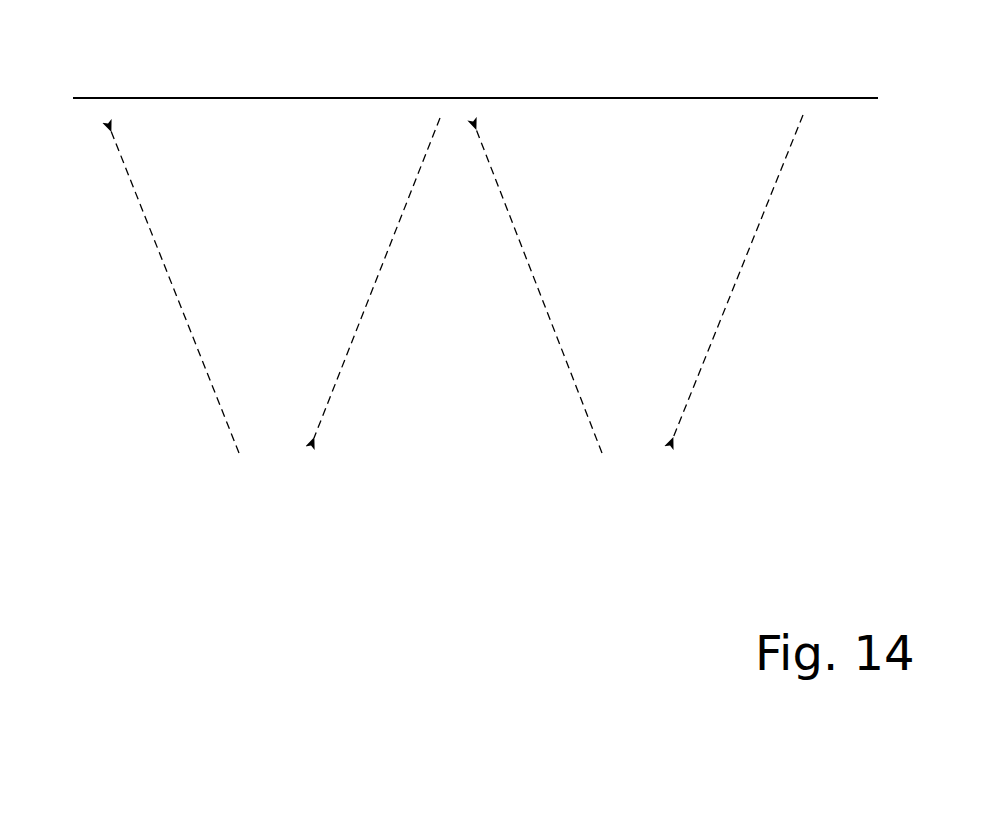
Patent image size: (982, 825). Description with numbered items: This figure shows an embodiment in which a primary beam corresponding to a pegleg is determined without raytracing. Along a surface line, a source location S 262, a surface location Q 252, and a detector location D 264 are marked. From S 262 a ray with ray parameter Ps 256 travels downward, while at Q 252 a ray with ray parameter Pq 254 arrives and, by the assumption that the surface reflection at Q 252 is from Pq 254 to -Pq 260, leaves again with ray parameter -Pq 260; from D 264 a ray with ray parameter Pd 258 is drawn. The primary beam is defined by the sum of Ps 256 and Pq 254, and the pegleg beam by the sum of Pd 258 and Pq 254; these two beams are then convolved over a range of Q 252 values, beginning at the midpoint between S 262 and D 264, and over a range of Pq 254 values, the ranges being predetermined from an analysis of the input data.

The location Q 252 is at (463, 57).
The ray parameter Pq 254 is at (365, 198).
The ray parameter Ps 256 is at (62, 200).
The ray parameter Pd 258 is at (808, 195).
The ray parameter -Pq 260 is at (538, 195).
The source location S 262 is at (105, 57).
The detector location D 264 is at (823, 58).